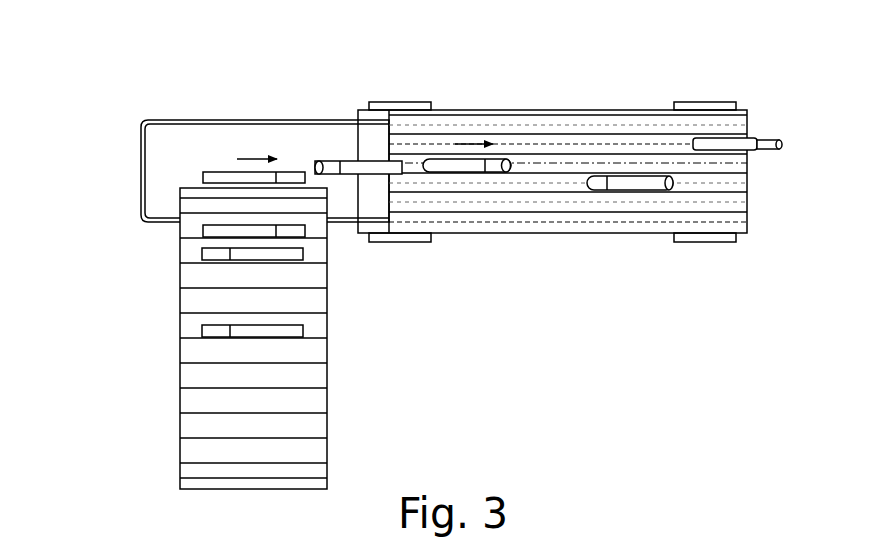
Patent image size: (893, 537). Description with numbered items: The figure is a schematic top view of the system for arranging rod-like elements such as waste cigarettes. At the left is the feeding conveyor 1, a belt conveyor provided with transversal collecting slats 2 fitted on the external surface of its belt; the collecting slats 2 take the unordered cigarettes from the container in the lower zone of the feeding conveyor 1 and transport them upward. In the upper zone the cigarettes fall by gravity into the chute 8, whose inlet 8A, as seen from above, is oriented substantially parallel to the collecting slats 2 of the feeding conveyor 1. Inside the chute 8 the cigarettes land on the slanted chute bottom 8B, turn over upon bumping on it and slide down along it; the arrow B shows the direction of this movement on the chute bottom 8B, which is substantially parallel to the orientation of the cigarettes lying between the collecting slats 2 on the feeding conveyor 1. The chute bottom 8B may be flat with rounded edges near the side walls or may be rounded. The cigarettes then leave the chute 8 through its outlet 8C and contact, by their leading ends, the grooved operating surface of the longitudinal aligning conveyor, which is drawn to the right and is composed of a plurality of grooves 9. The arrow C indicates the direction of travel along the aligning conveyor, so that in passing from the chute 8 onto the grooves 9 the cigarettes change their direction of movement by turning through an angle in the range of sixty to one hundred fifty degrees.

The feeding conveyor 1 is at (162, 380).
The collecting slats 2 is at (212, 288).
The chute 8 is at (142, 173).
The inlet of the chute 8A is at (178, 112).
The chute bottom 8B is at (290, 143).
The outlet of the chute 8C is at (385, 145).
The grooves 9 is at (525, 167).
The direction of movement of the cigarettes on the chute bottom B is at (250, 156).
The transfer direction C is at (472, 142).